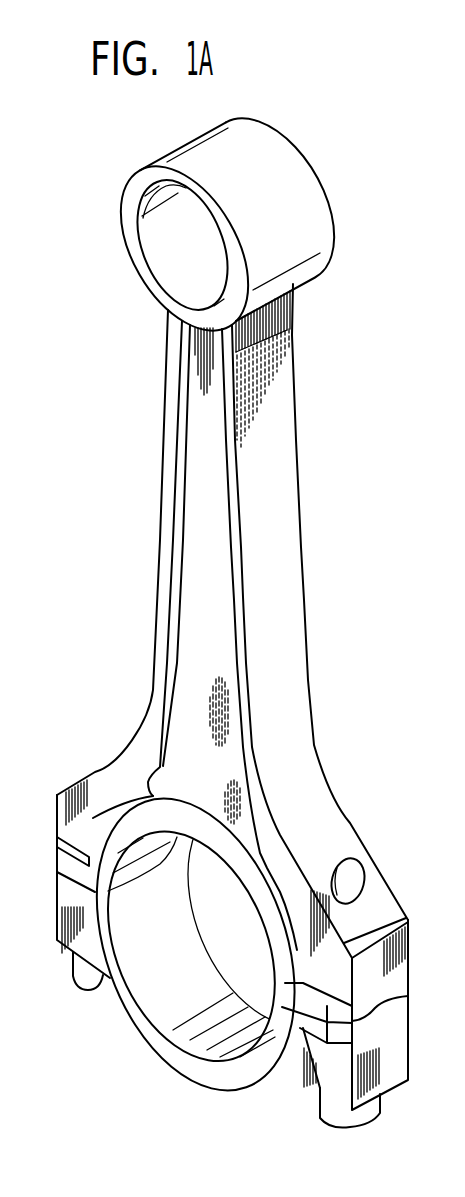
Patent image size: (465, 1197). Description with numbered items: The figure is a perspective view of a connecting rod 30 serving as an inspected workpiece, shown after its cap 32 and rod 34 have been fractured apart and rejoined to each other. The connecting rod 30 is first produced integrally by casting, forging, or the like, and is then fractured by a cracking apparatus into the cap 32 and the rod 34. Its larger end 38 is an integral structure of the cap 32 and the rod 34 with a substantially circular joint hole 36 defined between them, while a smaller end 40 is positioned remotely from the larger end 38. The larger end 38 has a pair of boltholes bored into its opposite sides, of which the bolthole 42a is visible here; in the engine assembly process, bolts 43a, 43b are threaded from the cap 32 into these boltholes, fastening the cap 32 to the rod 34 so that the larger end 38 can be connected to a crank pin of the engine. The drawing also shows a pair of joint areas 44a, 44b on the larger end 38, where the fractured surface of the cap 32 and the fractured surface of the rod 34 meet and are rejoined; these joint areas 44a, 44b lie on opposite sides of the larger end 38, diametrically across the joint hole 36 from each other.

The connecting rod 30 is at (143, 133).
The smaller end 40 is at (274, 155).
The rod 34 is at (143, 736).
The larger end 38 is at (109, 789).
The cap 32 is at (125, 1018).
The joint hole 36 is at (187, 1001).
The bolthole 42a is at (353, 880).
The bolt 43a is at (373, 1112).
The bolt 43b is at (92, 975).
The joint area 44a is at (387, 1018).
The joint area 44b is at (71, 884).